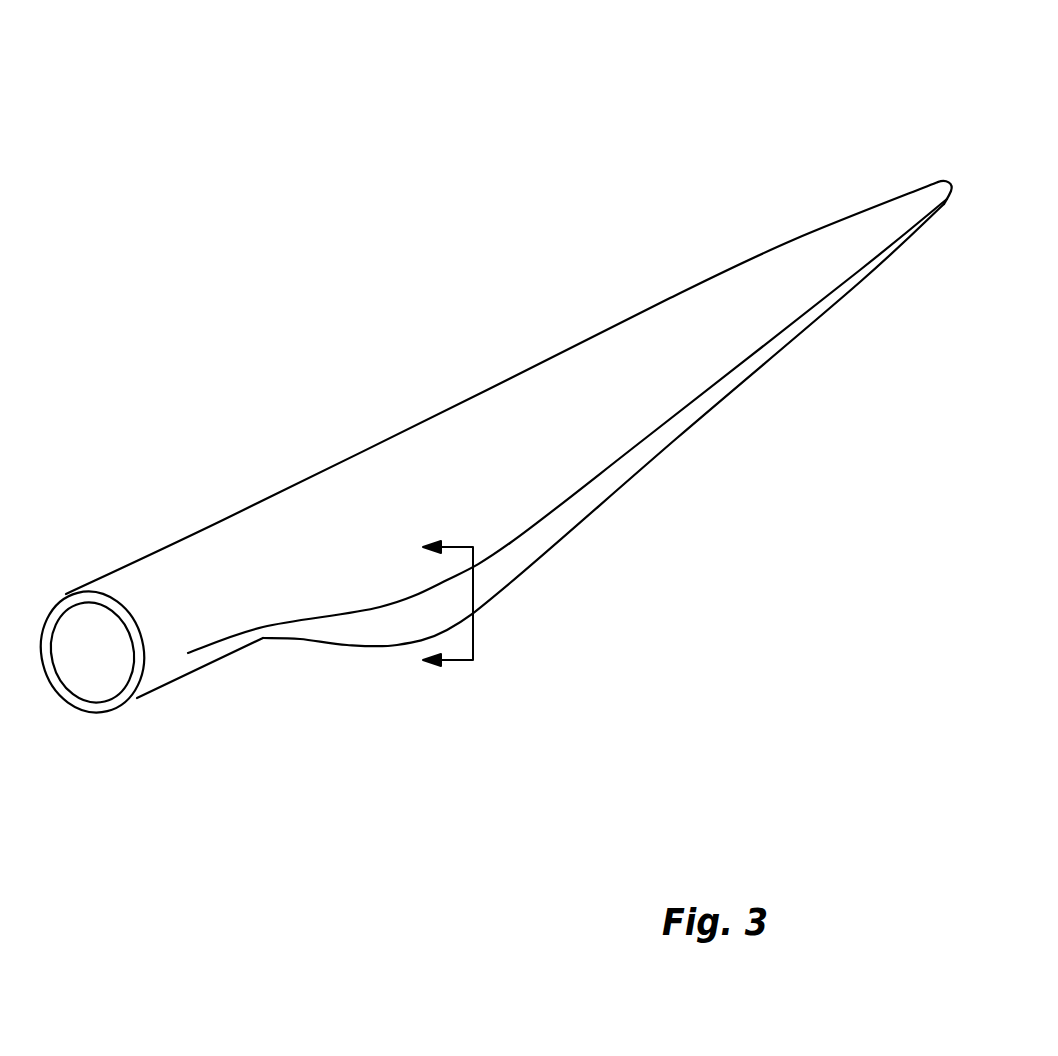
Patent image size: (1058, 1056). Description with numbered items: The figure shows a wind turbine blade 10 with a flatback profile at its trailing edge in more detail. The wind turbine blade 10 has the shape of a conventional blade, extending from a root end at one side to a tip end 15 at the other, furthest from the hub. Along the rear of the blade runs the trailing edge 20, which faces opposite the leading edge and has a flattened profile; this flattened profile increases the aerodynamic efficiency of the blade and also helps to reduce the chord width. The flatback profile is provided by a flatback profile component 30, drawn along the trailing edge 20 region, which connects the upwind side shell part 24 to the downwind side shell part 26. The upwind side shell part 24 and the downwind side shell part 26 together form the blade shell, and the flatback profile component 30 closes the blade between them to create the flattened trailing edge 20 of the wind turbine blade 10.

The wind turbine blade 10 is at (493, 446).
The tip end 15 is at (945, 182).
The trailing edge 20 is at (653, 435).
The upwind side shell part 24 is at (598, 367).
The downwind side shell part 26 is at (152, 688).
The flatback profile component 30 is at (532, 540).